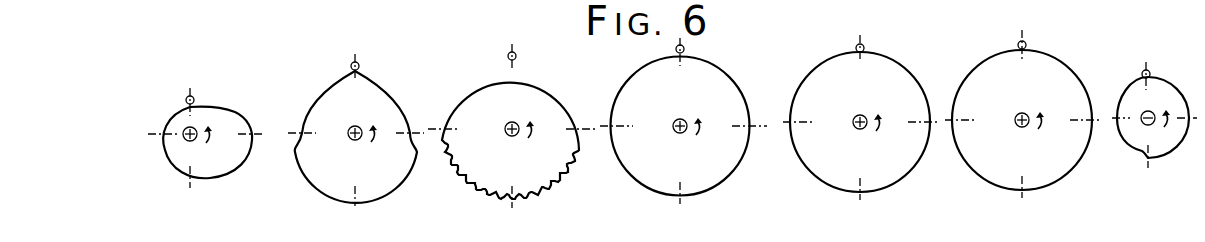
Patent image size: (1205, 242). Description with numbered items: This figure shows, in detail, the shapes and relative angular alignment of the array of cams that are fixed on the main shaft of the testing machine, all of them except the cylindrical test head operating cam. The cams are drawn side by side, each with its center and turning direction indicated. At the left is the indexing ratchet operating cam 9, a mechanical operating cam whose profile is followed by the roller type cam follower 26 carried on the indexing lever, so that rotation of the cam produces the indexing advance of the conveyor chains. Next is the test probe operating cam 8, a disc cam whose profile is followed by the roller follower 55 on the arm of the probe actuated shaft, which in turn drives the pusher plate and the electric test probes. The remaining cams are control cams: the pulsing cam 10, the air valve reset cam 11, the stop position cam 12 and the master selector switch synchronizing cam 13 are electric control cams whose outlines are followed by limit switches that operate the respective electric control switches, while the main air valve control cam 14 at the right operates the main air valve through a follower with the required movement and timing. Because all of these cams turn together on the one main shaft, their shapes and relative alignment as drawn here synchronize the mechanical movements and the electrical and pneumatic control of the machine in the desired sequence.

The indexing ratchet operating cam 9 is at (178, 117).
The roller type cam follower 26 is at (195, 98).
The test probe operating cam 8 is at (322, 99).
The roller follower 55 is at (359, 66).
The pulsing cam 10 is at (467, 90).
The air valve reset cam 11 is at (637, 85).
The stop position cam 12 is at (821, 82).
The master selector switch synchronizing cam 13 is at (985, 77).
The main air valve control cam 14 is at (1138, 96).